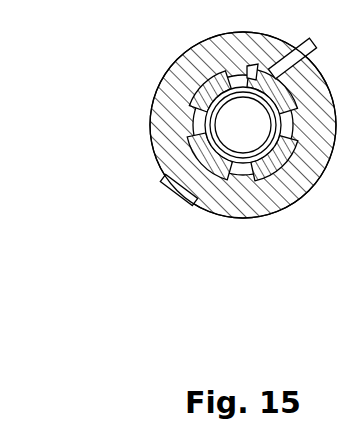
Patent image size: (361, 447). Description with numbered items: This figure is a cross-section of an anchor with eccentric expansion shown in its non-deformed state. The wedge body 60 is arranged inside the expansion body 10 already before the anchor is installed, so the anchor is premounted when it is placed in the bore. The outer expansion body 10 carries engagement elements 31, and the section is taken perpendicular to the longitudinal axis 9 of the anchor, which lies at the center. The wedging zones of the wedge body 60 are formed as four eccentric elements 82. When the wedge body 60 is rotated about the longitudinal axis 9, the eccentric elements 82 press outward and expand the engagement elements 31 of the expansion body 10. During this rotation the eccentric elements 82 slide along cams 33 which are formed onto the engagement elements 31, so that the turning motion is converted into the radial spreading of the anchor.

The longitudinal axis 9 is at (160, 131).
The expansion body 10 is at (242, 124).
The engagement elements 31 is at (217, 53).
The cams 33 is at (237, 71).
The wedge body 60 is at (205, 150).
The eccentric elements 82 is at (193, 105).